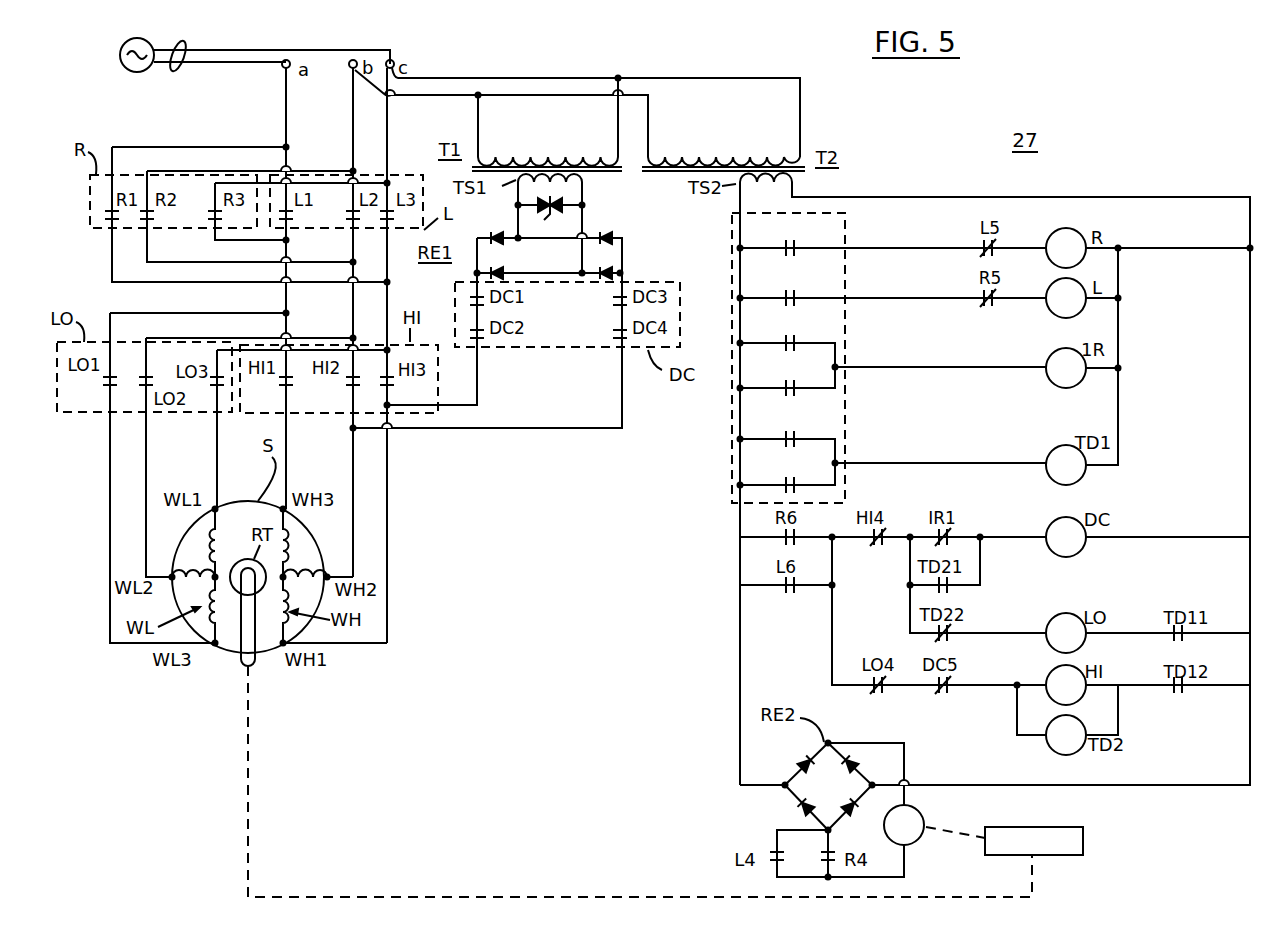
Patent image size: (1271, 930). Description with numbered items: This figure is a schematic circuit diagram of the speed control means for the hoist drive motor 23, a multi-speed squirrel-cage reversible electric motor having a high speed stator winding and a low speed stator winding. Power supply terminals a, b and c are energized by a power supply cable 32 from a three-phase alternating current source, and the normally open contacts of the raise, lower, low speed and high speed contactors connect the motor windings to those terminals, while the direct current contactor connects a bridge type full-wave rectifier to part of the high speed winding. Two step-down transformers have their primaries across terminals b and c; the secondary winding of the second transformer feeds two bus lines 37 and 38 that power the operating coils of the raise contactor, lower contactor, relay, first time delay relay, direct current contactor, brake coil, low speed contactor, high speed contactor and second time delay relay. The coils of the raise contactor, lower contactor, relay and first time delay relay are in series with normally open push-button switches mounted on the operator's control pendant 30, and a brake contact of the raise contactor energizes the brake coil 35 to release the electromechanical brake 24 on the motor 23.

The power supply cable 32 is at (183, 42).
The hoist motor 23 is at (243, 498).
The control pendant 30 is at (850, 351).
The bus line 37 is at (736, 513).
The bus line 38 is at (1090, 200).
The brake coil 35 is at (920, 812).
The electromechanical brake 24 is at (1085, 845).